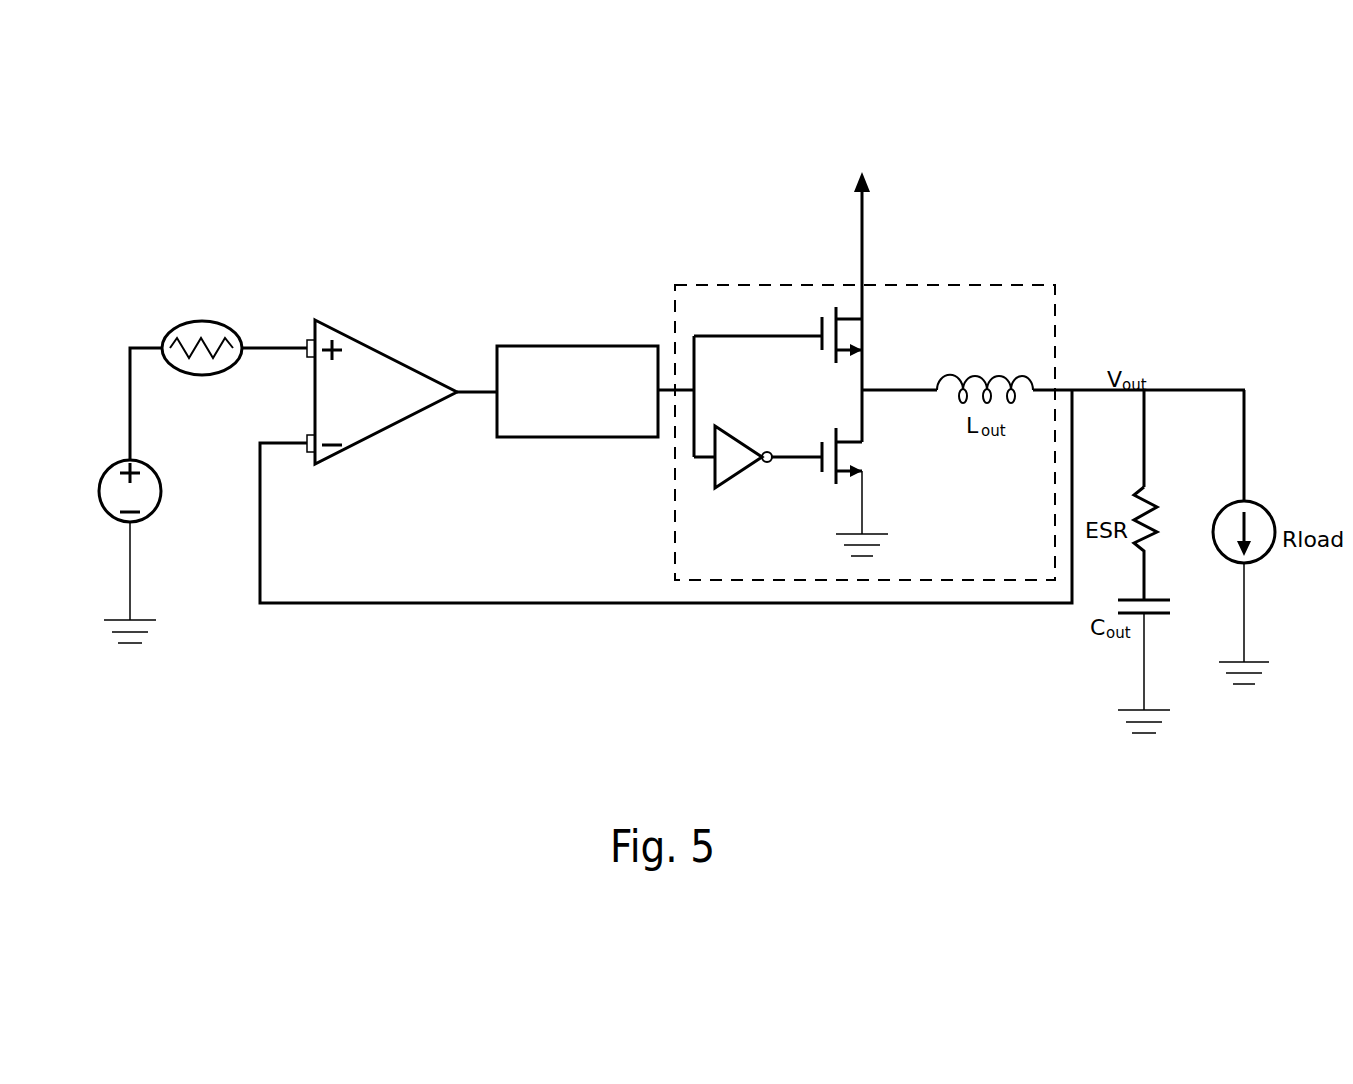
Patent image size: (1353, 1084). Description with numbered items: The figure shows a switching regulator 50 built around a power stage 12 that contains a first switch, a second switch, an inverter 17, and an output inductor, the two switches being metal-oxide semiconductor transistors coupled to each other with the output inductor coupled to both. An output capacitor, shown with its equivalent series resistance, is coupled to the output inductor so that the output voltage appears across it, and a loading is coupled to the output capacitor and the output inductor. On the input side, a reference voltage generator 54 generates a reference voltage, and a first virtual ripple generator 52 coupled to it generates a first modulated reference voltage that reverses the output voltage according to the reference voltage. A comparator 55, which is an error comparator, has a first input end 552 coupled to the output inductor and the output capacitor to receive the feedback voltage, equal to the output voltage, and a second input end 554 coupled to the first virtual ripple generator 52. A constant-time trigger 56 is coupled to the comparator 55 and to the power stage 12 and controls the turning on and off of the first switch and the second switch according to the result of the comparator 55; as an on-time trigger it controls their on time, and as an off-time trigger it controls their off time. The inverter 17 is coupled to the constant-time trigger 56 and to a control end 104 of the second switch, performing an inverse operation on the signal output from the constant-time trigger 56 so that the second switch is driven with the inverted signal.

The switching regulator 50 is at (1152, 223).
The power stage 12 is at (1055, 300).
The first virtual ripple generator 52 is at (202, 375).
The reference voltage generator 54 is at (98, 490).
The comparator 55 is at (405, 437).
The second input end 554 is at (316, 320).
The first input end 552 is at (316, 464).
The constant-time trigger 56 is at (578, 437).
The inverter 17 is at (740, 468).
The control end 104 is at (797, 457).